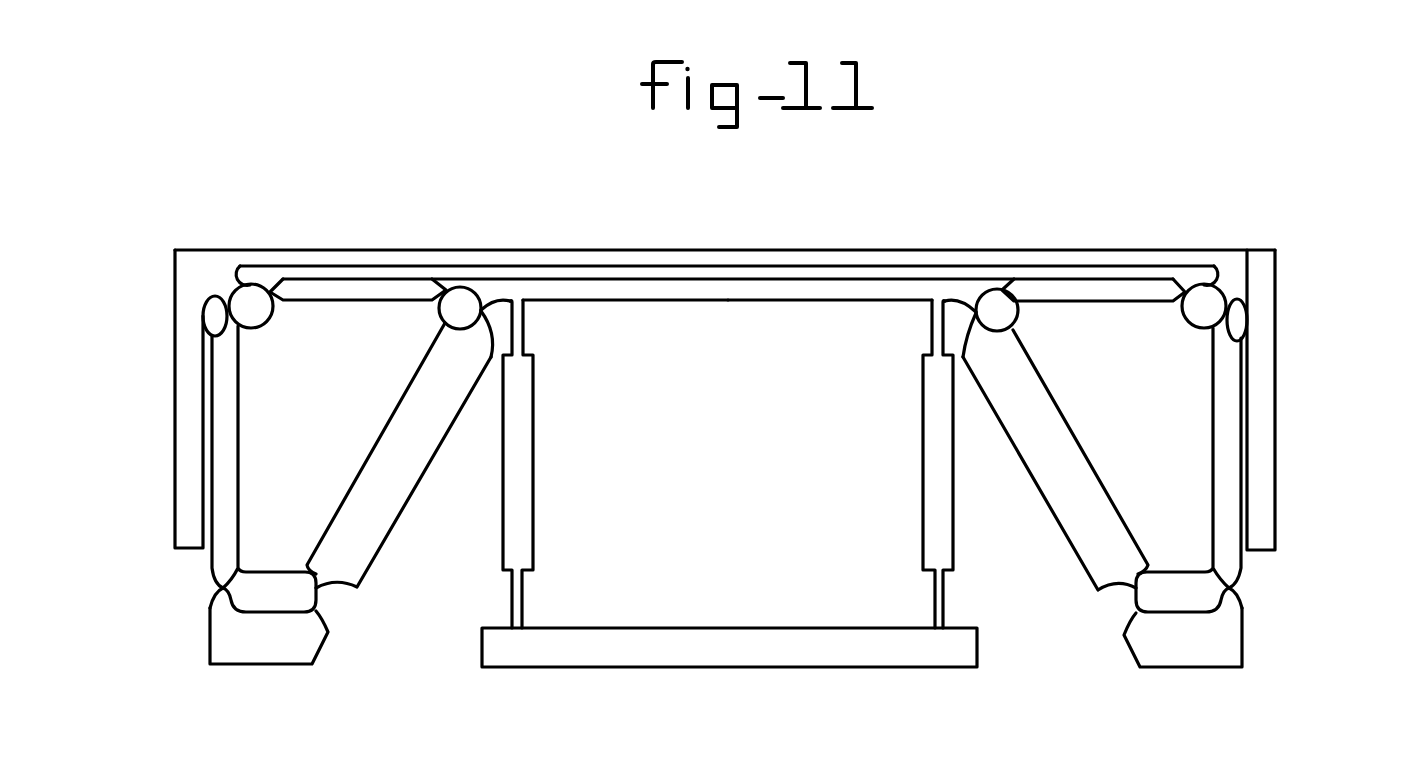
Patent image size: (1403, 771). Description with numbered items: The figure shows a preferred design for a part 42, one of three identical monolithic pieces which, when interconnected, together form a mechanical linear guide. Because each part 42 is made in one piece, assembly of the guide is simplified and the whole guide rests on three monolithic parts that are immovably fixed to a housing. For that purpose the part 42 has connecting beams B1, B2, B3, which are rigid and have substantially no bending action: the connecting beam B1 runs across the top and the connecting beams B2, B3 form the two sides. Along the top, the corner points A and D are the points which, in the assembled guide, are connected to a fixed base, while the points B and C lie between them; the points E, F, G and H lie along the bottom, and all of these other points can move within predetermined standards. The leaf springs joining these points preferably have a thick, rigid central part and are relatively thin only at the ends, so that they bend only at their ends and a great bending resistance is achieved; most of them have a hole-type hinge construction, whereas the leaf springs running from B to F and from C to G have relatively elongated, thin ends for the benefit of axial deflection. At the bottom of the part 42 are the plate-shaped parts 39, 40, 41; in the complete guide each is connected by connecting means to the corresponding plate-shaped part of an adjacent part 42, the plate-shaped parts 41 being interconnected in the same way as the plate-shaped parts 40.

The part 42 is at (699, 247).
The connecting beam B1 is at (808, 264).
The connecting beam B2 is at (188, 371).
The connecting beam B3 is at (1265, 378).
The corner point A is at (218, 277).
The point B is at (493, 288).
The point C is at (963, 290).
The corner point D is at (1240, 282).
The point E is at (233, 637).
The point F is at (515, 650).
The point G is at (935, 653).
The point H is at (1218, 653).
The plate-shaped part 39 is at (712, 648).
The plate-shaped part 40 is at (288, 650).
The plate-shaped part 41 is at (1167, 648).